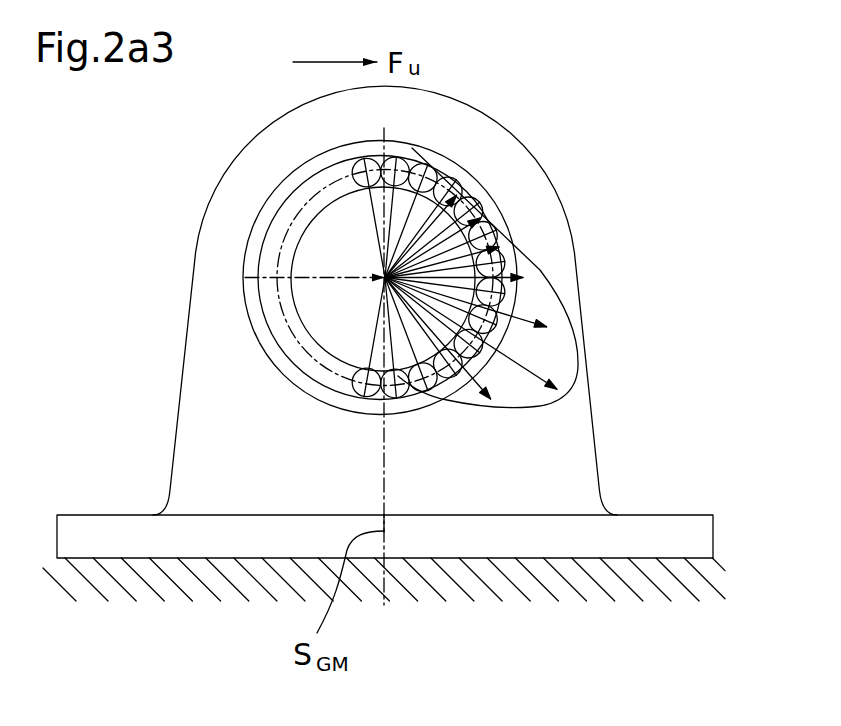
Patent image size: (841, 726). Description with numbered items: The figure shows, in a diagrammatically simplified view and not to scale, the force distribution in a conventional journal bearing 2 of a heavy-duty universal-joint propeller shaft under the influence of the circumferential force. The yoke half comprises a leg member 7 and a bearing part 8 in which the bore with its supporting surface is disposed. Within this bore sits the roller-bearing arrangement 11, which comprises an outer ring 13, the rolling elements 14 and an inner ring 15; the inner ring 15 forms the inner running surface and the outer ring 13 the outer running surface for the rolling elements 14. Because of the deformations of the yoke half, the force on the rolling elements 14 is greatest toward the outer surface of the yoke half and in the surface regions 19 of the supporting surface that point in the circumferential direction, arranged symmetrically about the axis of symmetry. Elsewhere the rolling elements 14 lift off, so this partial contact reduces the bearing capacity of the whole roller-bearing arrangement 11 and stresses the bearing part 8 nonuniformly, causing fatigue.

The journal bearing 2 is at (384, 372).
The leg member 7 is at (523, 550).
The bearing part 8 is at (558, 223).
The roller-bearing arrangement 11 is at (270, 259).
The outer ring 13 is at (447, 165).
The rolling elements 14 is at (358, 378).
The inner ring 15 is at (322, 318).
The surface regions of the supporting surface pointing in the circumferential direct 19 is at (545, 410).